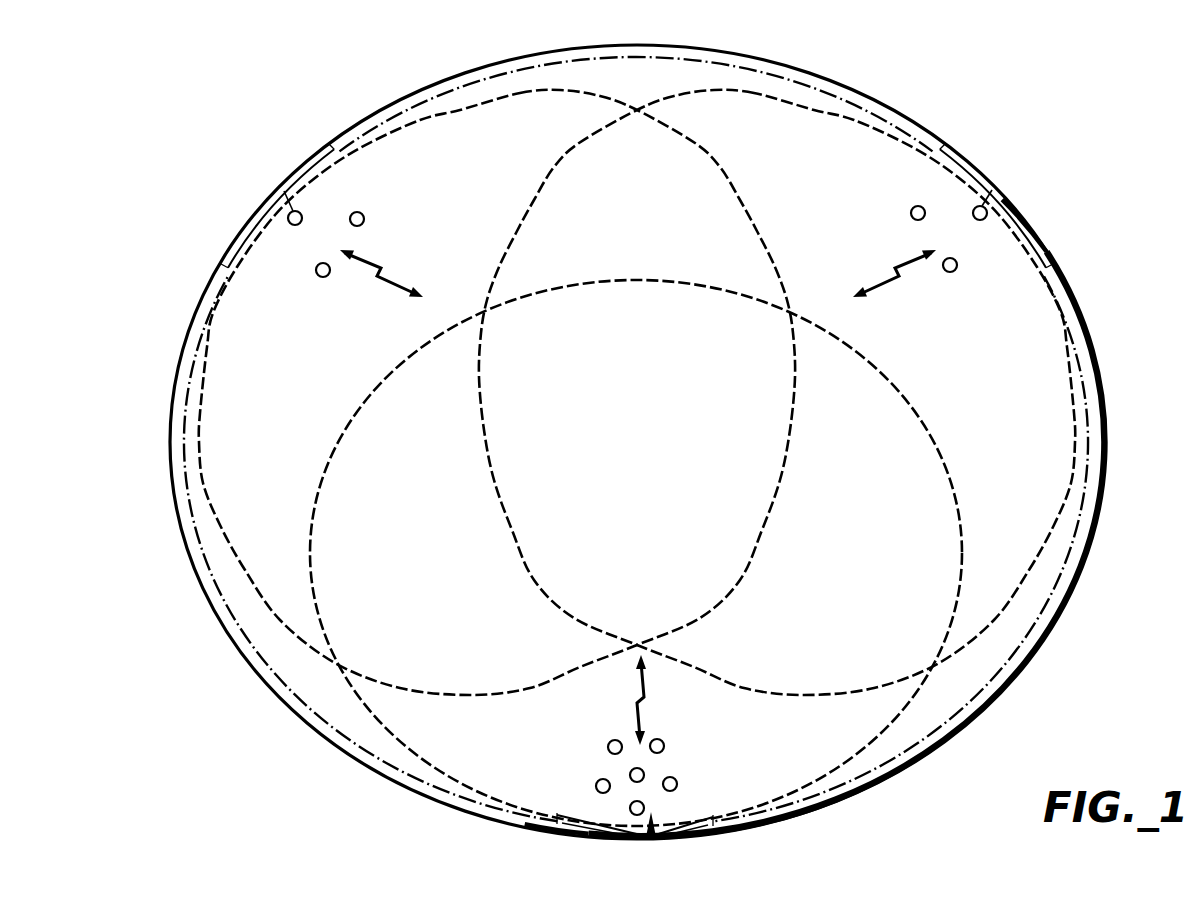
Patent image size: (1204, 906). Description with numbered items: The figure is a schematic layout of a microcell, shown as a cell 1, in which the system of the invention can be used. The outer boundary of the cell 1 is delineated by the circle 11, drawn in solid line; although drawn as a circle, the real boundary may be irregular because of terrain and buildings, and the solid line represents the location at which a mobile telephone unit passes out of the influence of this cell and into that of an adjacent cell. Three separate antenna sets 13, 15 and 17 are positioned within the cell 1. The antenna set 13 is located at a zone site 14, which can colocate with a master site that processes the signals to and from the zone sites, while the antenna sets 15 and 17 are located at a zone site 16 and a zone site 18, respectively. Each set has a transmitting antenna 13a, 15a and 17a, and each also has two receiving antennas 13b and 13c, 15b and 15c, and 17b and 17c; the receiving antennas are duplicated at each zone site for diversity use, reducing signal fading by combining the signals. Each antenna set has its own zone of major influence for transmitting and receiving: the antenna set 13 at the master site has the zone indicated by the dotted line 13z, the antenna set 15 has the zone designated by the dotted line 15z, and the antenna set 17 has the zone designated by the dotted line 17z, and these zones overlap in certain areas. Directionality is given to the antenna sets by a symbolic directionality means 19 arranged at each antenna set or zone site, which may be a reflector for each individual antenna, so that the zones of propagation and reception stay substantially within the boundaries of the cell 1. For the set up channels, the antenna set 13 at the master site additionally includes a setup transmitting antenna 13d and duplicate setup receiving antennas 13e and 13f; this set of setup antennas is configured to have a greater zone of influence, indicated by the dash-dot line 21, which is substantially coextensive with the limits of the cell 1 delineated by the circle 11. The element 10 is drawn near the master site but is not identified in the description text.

The cell 1 is at (442, 73).
The feed point 10 is at (653, 826).
The circle 11 is at (389, 108).
The antenna set 13 is at (580, 752).
The transmitting antenna 13a is at (635, 816).
The receiving antenna 13b is at (598, 782).
The receiving antenna 13c is at (676, 779).
The setup transmitting antenna 13d is at (643, 781).
The setup receiving antenna 13e is at (612, 740).
The setup receiving antenna 13f is at (660, 739).
The dotted line 13z is at (330, 463).
The zone site 14 is at (648, 898).
The antenna set 15 is at (355, 275).
The transmitting antenna 15a is at (283, 189).
The receiving antenna 15b is at (321, 277).
The receiving antenna 15c is at (357, 212).
The dotted line 15z is at (722, 163).
The zone site 16 is at (285, 172).
The antenna set 17 is at (921, 275).
The transmitting antenna 17a is at (996, 184).
The receiving antenna 17b is at (917, 206).
The receiving antenna 17c is at (951, 272).
The dotted line 17z is at (514, 505).
The zone site 18 is at (1020, 171).
The directionality means 19 is at (315, 160).
The dash-dot line 21 is at (930, 754).